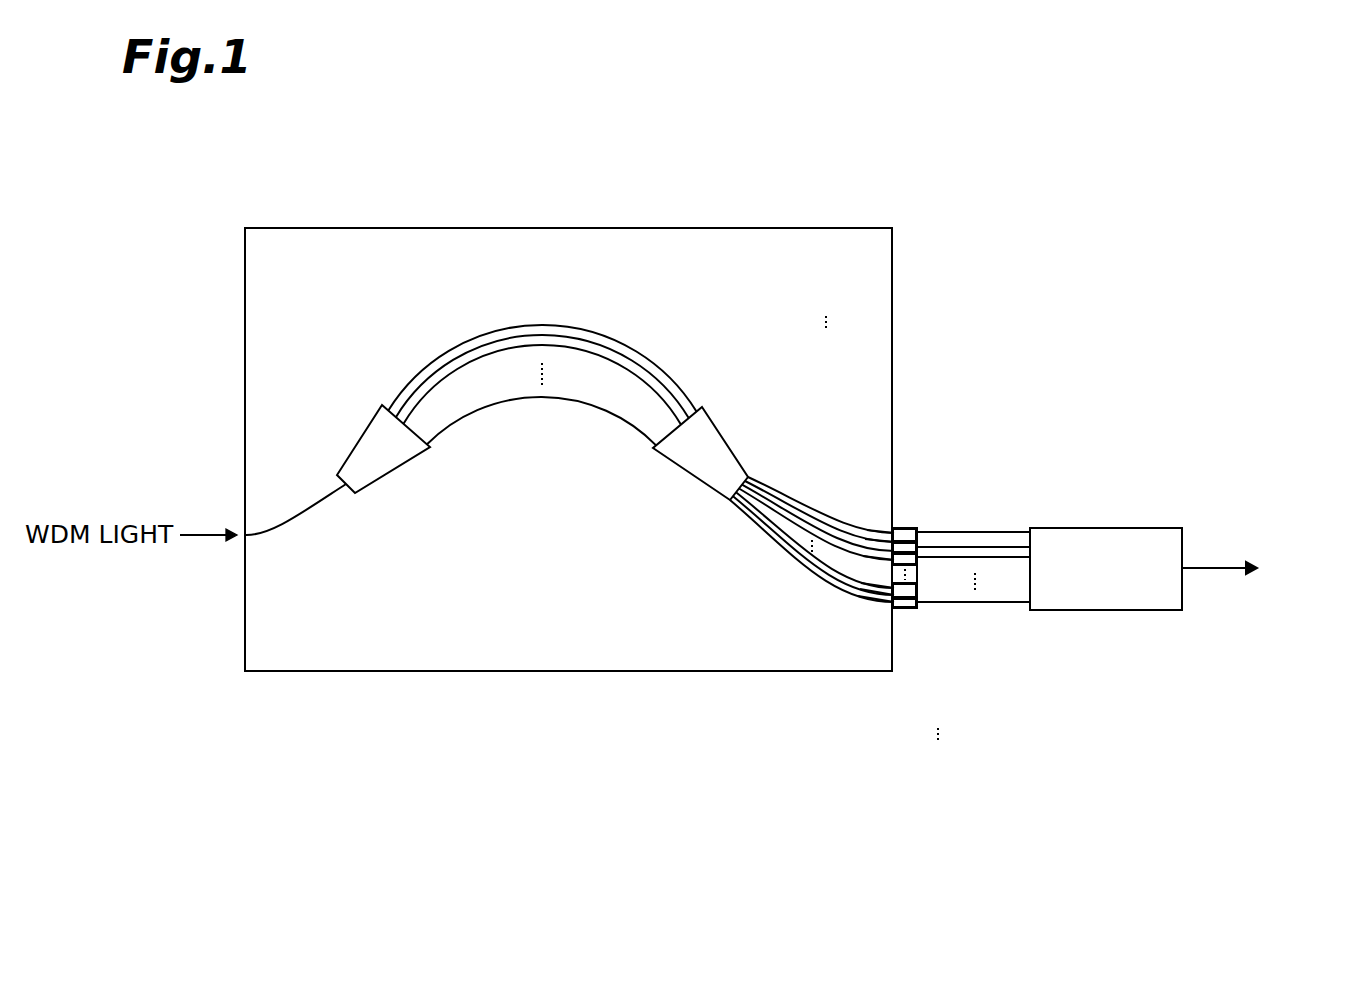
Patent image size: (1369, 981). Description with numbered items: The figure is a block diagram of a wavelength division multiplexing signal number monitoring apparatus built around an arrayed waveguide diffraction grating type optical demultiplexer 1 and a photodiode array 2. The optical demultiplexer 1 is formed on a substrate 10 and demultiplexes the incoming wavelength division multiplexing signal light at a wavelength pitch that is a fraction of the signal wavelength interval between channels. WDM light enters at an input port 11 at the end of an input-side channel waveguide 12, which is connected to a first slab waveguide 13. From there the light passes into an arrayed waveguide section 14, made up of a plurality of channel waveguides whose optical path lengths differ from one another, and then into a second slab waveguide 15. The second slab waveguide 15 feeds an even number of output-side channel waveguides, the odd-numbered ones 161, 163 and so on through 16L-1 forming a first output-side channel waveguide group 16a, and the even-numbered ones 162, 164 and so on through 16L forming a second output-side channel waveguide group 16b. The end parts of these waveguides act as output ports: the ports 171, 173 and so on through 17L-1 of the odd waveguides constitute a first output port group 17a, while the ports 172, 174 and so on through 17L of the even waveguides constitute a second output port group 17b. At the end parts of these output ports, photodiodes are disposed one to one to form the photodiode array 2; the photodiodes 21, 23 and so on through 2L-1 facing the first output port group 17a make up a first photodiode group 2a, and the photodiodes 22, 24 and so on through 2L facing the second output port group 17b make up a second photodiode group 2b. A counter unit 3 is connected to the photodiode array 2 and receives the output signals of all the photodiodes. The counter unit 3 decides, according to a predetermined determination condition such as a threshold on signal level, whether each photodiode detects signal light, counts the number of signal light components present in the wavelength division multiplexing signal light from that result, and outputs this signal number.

The arrayed waveguide diffraction grating type optical demultiplexer 1 is at (806, 442).
The substrate 10 is at (892, 258).
The input port 11 is at (246, 537).
The input-side channel waveguide 12 is at (303, 513).
The first slab waveguide 13 is at (373, 462).
The arrayed waveguide section 14 is at (543, 325).
The second slab waveguide 15 is at (693, 460).
The first output-side channel waveguide group 16a is at (858, 404).
The second output-side channel waveguide group 16b is at (765, 616).
The output-side channel waveguide 161 is at (756, 484).
The output-side channel waveguide 163 is at (786, 502).
The output-side channel waveguide 16L-1 is at (803, 528).
The output-side channel waveguide 162 is at (766, 518).
The output-side channel waveguide 164 is at (782, 537).
The output-side channel waveguide 16L is at (797, 556).
The first output port group 17a is at (810, 253).
The second output port group 17b is at (860, 721).
The output port 171 is at (893, 534).
The output port 173 is at (893, 543).
The output port 17L-1 is at (893, 560).
The output port 172 is at (880, 588).
The output port 174 is at (884, 596).
The output port 17L is at (888, 604).
The photodiode array 2 is at (934, 614).
The first photodiode group 2a is at (1035, 458).
The second photodiode group 2b is at (958, 660).
The photodiode 21 is at (900, 530).
The photodiode 23 is at (905, 546).
The photodiode 2L-1 is at (912, 560).
The photodiode 22 is at (914, 604).
The photodiode 24 is at (908, 606).
The photodiode 2L is at (903, 608).
The counter unit 3 is at (1105, 528).